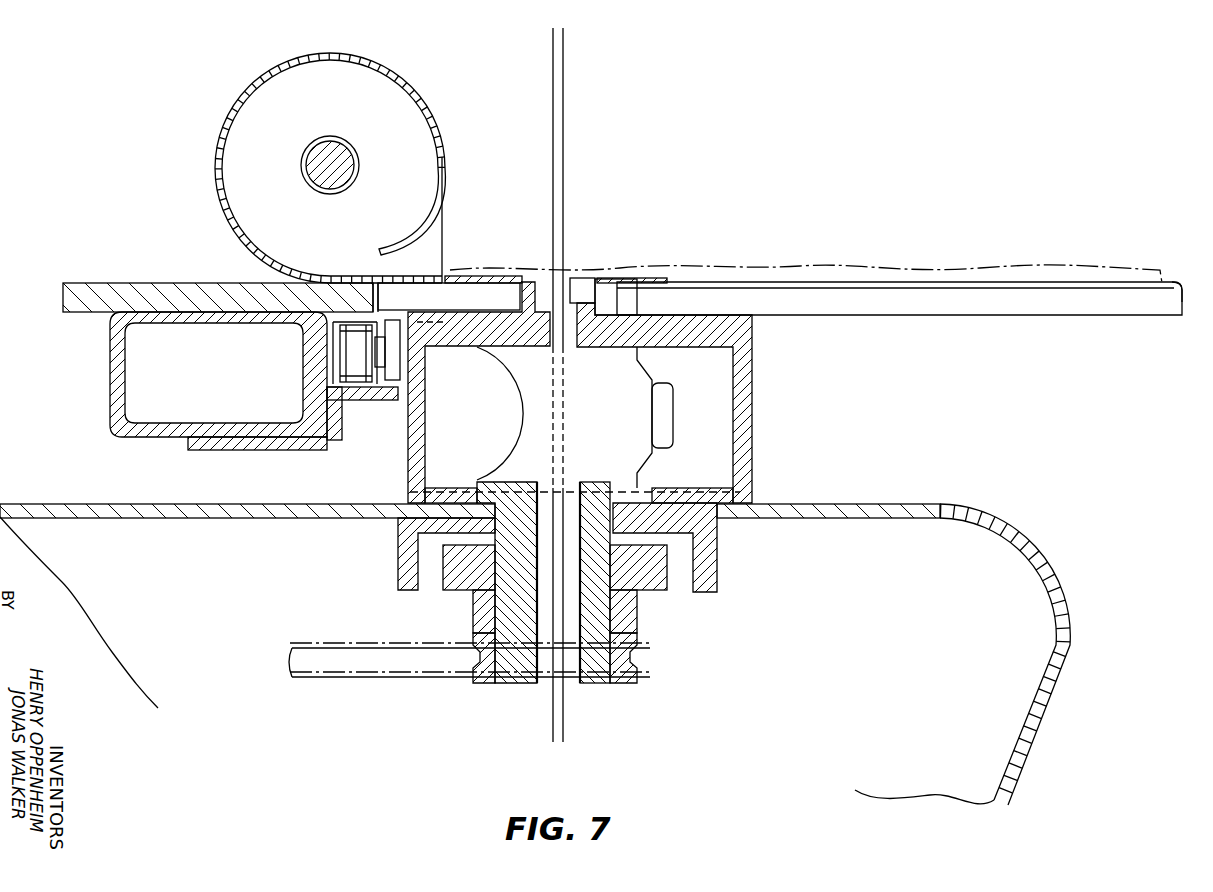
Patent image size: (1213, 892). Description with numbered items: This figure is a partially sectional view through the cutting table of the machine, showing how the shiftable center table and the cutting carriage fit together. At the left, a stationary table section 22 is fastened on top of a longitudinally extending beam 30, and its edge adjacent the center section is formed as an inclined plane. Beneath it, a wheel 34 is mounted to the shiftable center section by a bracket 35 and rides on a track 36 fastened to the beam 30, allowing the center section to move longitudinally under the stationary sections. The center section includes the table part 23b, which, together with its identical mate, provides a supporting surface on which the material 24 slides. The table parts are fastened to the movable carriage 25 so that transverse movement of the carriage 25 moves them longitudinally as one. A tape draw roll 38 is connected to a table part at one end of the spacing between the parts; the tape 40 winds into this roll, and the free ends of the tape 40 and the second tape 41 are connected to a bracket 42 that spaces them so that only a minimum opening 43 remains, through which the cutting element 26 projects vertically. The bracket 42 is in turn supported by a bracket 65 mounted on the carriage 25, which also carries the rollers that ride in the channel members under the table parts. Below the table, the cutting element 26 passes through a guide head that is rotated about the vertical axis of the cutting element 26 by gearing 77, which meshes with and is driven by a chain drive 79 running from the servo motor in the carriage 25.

The stationary table section 22 is at (100, 284).
The center table part 23b is at (928, 305).
The material 24 is at (1040, 250).
The movable carriage 25 is at (1082, 553).
The cutting element 26 is at (565, 124).
The longitudinally extending beam 30 is at (118, 348).
The wheel 34 is at (345, 347).
The bracket 35 is at (390, 366).
The track 36 is at (383, 398).
The tape draw roll 38 is at (428, 62).
The tape 40 is at (440, 284).
The tape 41 is at (1178, 283).
The bracket 42 is at (620, 280).
The opening 43 is at (575, 283).
The bracket 65 is at (748, 396).
The gearing 77 is at (632, 632).
The chain drive 79 is at (352, 680).